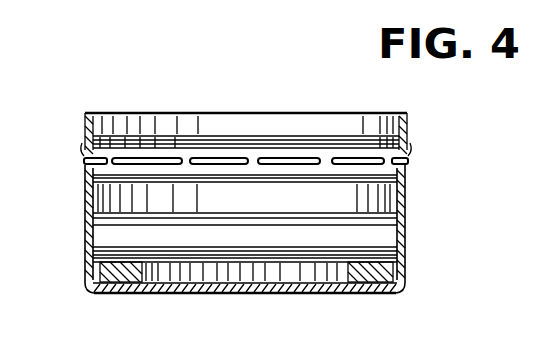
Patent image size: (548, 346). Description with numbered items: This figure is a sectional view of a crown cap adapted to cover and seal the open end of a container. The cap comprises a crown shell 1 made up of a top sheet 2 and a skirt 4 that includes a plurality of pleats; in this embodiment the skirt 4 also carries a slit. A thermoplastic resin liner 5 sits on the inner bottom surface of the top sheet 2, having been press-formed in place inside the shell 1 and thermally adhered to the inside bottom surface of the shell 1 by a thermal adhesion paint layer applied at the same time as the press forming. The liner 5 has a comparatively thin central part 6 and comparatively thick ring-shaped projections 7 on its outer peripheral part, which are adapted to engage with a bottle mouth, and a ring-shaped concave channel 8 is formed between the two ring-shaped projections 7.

The crown shell 1 is at (417, 146).
The top sheet 2 is at (234, 294).
The skirt 4 is at (86, 210).
The thermoplastic resin liner 5 is at (233, 265).
The central part 6 is at (292, 294).
The ring-shaped projections 7 is at (132, 266).
The ring-shaped concave channel 8 is at (110, 294).